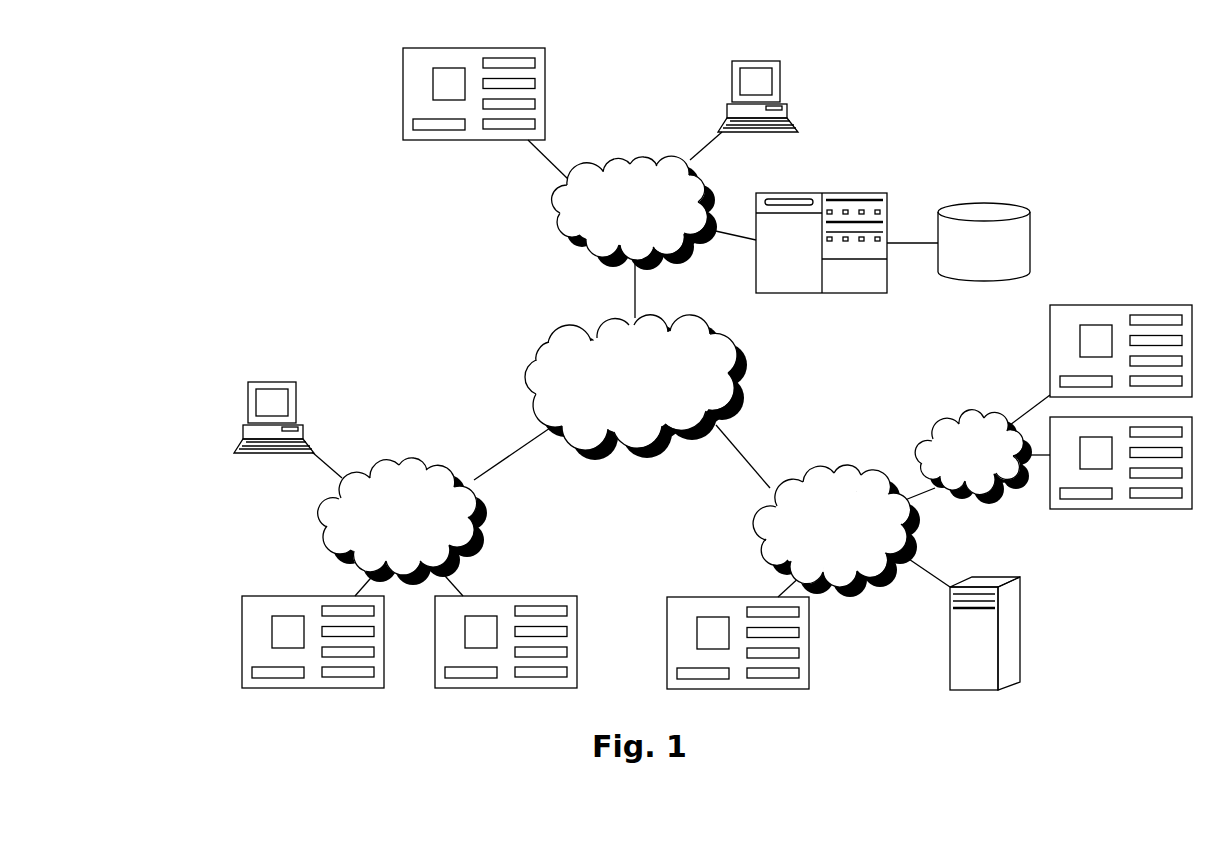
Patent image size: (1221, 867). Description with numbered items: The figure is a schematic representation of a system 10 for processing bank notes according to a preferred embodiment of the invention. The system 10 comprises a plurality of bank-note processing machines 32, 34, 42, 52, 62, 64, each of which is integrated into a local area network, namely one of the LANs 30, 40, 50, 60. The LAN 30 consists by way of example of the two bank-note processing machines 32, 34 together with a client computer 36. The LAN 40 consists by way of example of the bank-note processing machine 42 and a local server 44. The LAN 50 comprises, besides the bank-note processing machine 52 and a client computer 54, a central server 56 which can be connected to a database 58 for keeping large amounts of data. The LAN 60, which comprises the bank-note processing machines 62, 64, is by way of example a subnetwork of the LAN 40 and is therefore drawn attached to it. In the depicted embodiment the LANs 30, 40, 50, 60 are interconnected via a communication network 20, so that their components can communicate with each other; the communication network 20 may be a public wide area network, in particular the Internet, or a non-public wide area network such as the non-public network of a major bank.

The system for processing bank notes 10 is at (298, 136).
The communication network 20 is at (618, 386).
The LAN 30 is at (386, 526).
The bank-note processing machine 32 is at (242, 623).
The bank-note processing machine 34 is at (577, 623).
The client computer 36 is at (240, 440).
The LAN 40 is at (820, 536).
The bank-note processing machine 42 is at (810, 675).
The local server 44 is at (950, 665).
The LAN 50 is at (616, 216).
The bank-note processing machine 52 is at (403, 85).
The client computer 54 is at (790, 108).
The central server 56 is at (778, 256).
The database 58 is at (970, 256).
The LAN 60 is at (960, 468).
The bank-note processing machine 62 is at (1080, 508).
The bank-note processing machine 64 is at (1049, 362).